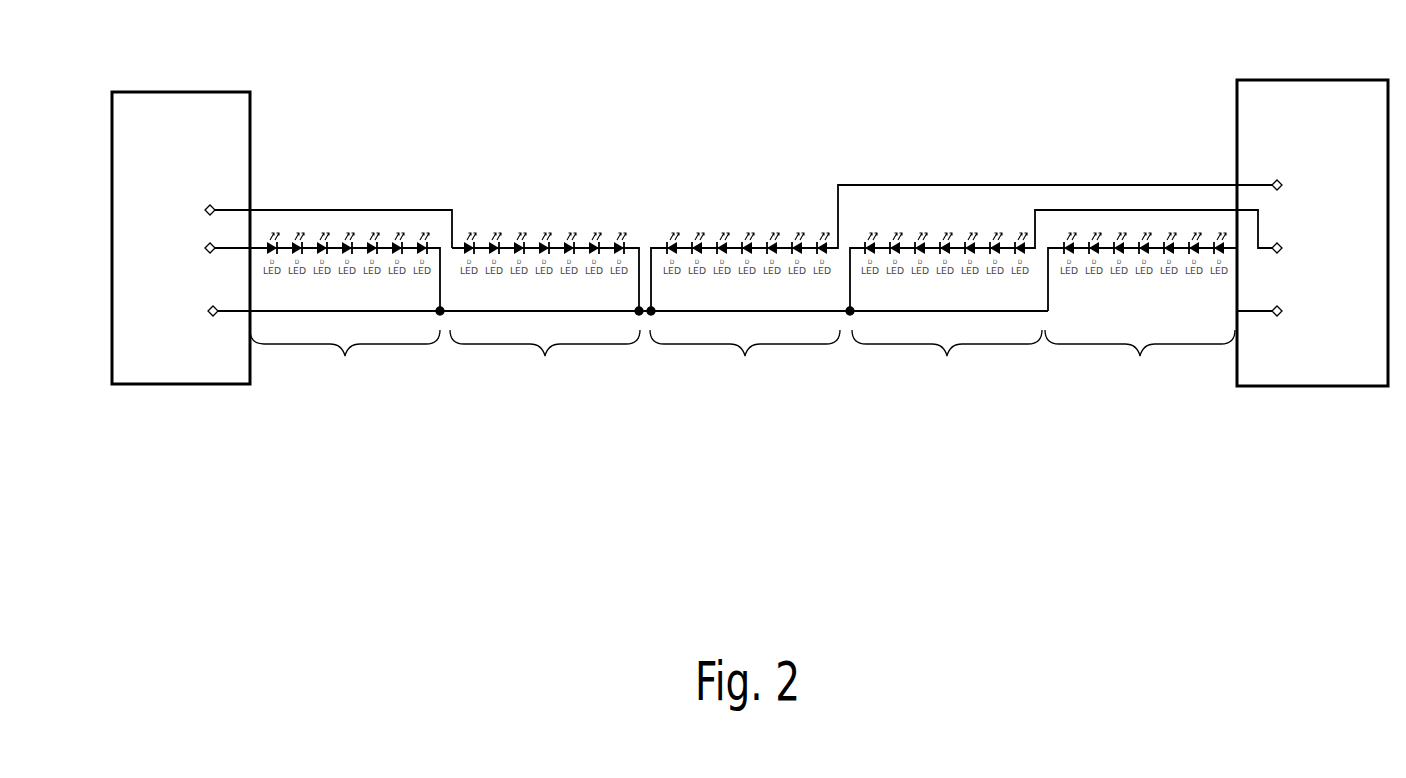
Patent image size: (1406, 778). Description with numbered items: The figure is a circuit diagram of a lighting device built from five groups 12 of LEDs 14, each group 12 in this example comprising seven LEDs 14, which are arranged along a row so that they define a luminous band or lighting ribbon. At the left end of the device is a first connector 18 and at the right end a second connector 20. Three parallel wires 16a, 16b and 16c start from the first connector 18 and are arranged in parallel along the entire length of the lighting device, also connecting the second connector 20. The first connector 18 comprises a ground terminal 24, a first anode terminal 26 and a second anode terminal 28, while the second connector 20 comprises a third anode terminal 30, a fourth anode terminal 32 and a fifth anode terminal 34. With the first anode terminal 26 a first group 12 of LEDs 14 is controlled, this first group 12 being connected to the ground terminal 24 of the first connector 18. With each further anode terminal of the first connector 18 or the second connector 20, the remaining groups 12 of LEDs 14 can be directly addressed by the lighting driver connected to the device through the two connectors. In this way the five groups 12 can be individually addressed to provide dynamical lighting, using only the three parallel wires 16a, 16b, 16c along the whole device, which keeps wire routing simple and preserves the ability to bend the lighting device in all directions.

The group 12 is at (761, 268).
The LED 14 is at (470, 241).
The wire 16a is at (383, 207).
The wire 16b is at (222, 247).
The wire 16c is at (293, 315).
The first connector 18 is at (236, 153).
The second connector 20 is at (1245, 170).
The ground terminal 24 is at (212, 318).
The first anode terminal 26 is at (207, 250).
The second anode terminal 28 is at (210, 205).
The third anode terminal 30 is at (1278, 317).
The fourth anode terminal 32 is at (1283, 246).
The fifth anode terminal 34 is at (1276, 180).